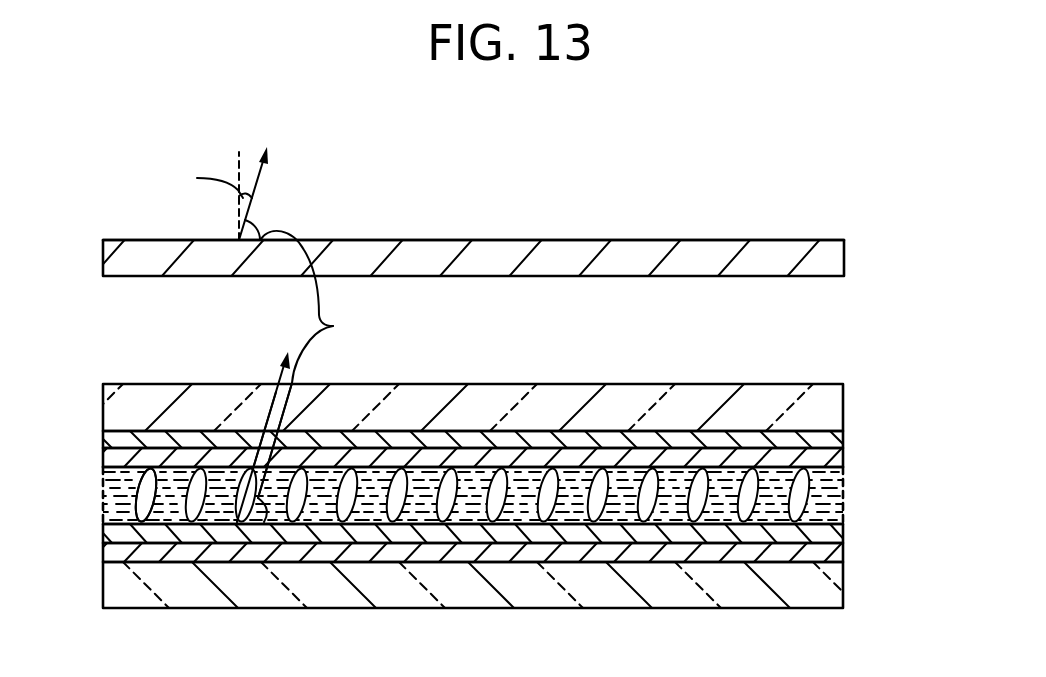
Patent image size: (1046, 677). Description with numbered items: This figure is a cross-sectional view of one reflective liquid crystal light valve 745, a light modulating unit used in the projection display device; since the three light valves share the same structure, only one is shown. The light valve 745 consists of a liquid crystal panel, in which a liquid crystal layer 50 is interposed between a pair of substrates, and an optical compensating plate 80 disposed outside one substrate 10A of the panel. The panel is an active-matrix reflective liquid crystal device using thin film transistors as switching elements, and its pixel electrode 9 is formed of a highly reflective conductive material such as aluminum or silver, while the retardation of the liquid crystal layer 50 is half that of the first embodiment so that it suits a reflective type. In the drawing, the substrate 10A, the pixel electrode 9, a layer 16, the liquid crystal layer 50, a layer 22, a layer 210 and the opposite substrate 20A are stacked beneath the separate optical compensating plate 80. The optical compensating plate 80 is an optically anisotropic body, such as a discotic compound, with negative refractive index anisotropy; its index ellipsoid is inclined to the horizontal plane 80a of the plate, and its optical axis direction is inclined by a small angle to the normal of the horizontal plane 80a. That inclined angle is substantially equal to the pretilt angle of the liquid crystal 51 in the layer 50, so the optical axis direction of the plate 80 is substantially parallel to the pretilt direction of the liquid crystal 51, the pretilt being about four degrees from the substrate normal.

The reflective liquid crystal light valve 745 is at (672, 220).
The optical compensating plate 80 is at (833, 257).
The horizontal plane of the optical compensating plate 80a is at (154, 239).
The substrate 10A is at (832, 402).
The pixel electrode 9 is at (835, 438).
The alignment film 16 is at (830, 458).
The liquid crystal layer 50 is at (835, 498).
The liquid crystal 51 is at (128, 496).
The alignment film 22 is at (833, 533).
The electrode layer 210 is at (833, 553).
The second substrate 20A is at (835, 597).